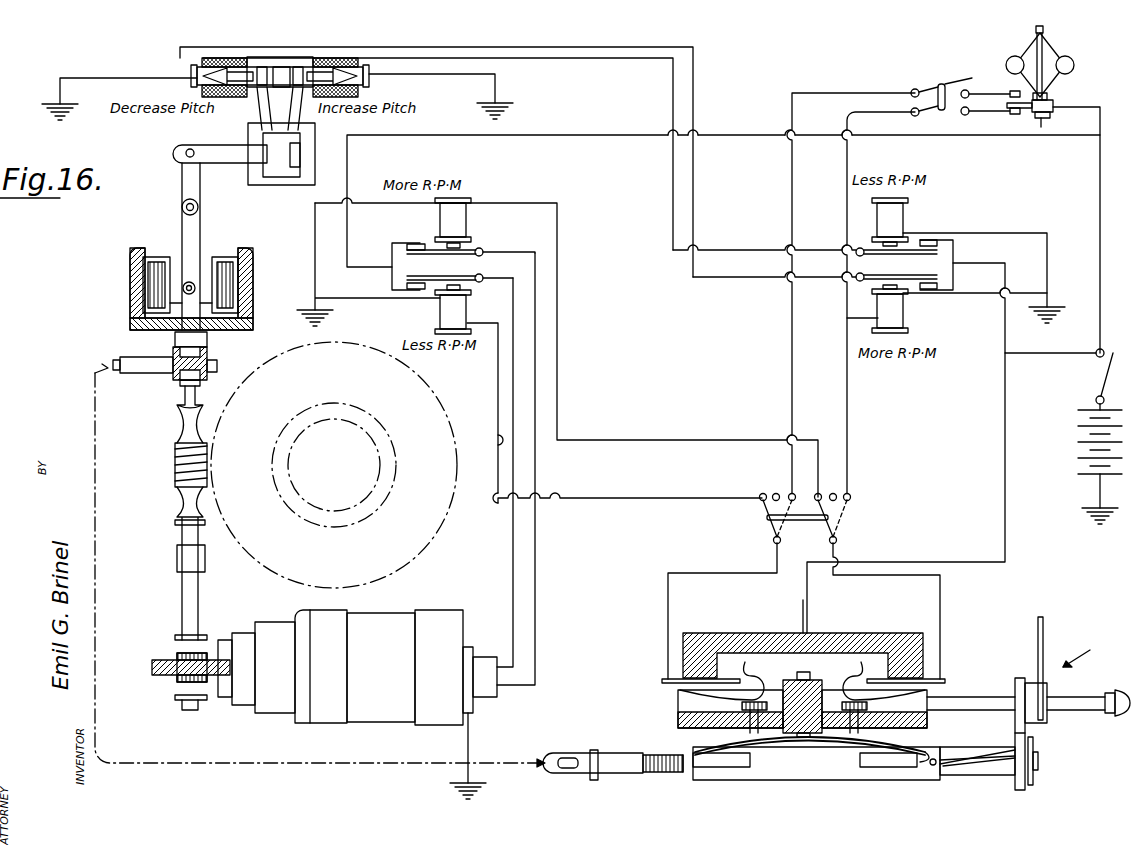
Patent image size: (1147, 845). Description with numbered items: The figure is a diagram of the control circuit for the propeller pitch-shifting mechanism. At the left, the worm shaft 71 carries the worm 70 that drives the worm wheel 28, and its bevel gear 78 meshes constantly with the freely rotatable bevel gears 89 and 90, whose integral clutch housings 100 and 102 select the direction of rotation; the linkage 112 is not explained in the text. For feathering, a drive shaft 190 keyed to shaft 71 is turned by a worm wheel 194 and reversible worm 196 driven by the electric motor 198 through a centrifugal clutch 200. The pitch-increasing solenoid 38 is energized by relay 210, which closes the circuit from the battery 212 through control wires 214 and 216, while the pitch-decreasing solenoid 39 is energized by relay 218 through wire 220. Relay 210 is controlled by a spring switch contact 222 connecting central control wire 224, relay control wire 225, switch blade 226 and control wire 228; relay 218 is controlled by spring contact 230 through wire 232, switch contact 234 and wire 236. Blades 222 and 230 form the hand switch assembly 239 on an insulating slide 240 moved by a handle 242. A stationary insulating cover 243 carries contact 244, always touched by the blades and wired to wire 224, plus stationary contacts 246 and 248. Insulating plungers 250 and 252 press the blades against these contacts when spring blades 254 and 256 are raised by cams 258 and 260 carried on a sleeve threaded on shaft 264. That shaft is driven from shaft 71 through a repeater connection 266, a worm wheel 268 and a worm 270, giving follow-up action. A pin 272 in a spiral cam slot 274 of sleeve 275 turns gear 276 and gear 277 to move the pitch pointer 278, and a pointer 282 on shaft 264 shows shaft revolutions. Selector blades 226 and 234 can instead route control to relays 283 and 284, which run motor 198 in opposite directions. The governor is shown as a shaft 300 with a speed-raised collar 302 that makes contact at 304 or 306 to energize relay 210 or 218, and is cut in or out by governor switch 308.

The worm wheel 28 is at (440, 410).
The pitch-increasing solenoid 38 is at (352, 58).
The pitch-decreasing solenoid 39 is at (224, 58).
The worm 70 is at (176, 467).
The worm shaft 71 is at (183, 416).
The worm shaft bevel gear 78 is at (168, 332).
The bevel gear 89 is at (254, 278).
The bevel gear 90 is at (133, 298).
The clutch housing 100 is at (227, 257).
The clutch housing 102 is at (156, 258).
The lever frame 112 is at (279, 172).
The drive shaft 190 is at (205, 592).
The worm wheel 194 is at (153, 666).
The worm 196 is at (176, 681).
The electric motor 198 is at (412, 526).
The centrifugal clutch 200 is at (268, 708).
The pitch-increasing relay 210 is at (904, 224).
The battery 212 is at (1082, 480).
The control wire 214 is at (986, 266).
The control wire 216 is at (743, 250).
The pitch-decreasing relay 218 is at (904, 324).
The control wire 220 is at (733, 278).
The spring switch contact 222 is at (682, 704).
The central control wire 224 is at (1012, 543).
The relay control wire 225 is at (715, 580).
The switch blade 226 is at (762, 508).
The control wire 228 is at (788, 455).
The spring contact 230 is at (940, 680).
The relay control wire 232 is at (941, 600).
The switch contact 234 is at (841, 524).
The wire 236 is at (848, 420).
The switch assembly 239 is at (1091, 650).
The insulating slide 240 is at (930, 720).
The handle 242 is at (1076, 703).
The stationary insulating cover 243 is at (890, 636).
The contact 244 is at (818, 653).
The stationary contact 246 is at (676, 686).
The stationary contact 248 is at (950, 683).
The insulating plunger 250 is at (757, 730).
The insulating plunger 252 is at (852, 730).
The spring blade 254 is at (680, 772).
The spring blade 256 is at (921, 766).
The cam 258 is at (736, 770).
The cam 260 is at (892, 770).
The shaft 264 is at (631, 758).
The repeater connection 266 is at (206, 766).
The worm wheel 268 is at (181, 386).
The worm 270 is at (214, 362).
The pin 272 is at (934, 768).
The spiral cam slot 274 is at (962, 768).
The sleeve 275 is at (982, 758).
The gear 276 is at (1030, 736).
The gear 277 is at (1020, 676).
The pointer 278 is at (1044, 642).
The pointer 282 is at (1036, 746).
The pitch increasing relay 283 is at (443, 298).
The pitch decreasing relay 284 is at (470, 232).
The governor shaft 300 is at (1034, 48).
The collar 302 is at (1056, 104).
The contact 304 is at (1012, 90).
The contact 306 is at (1016, 115).
The governor switch 308 is at (948, 84).